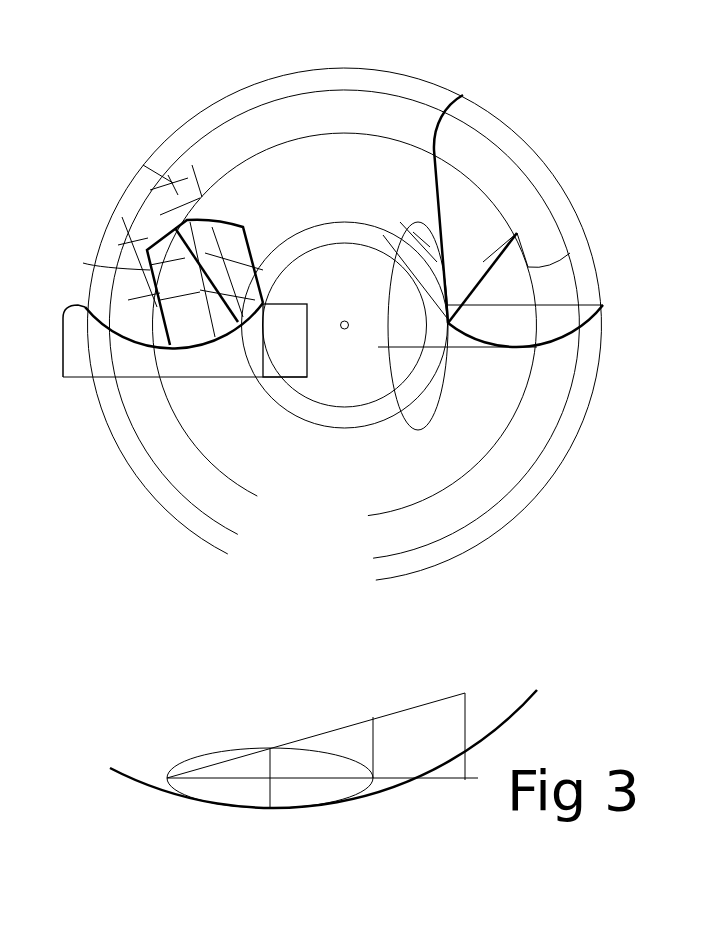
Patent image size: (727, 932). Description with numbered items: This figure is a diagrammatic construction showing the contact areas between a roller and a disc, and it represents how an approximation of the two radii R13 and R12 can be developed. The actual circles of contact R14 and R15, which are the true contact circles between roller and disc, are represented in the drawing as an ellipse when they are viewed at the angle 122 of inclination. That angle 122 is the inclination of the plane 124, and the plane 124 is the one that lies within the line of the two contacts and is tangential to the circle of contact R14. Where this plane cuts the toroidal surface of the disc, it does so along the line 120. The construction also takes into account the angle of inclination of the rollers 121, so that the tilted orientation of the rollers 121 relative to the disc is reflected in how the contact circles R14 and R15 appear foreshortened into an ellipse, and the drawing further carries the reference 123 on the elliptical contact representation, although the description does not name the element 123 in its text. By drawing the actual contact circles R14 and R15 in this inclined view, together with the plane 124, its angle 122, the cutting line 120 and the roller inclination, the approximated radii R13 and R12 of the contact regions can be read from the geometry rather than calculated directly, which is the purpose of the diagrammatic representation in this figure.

The line 120 is at (400, 120).
The rollers 121 is at (168, 175).
The angle of inclination 122 is at (507, 712).
The lens-shaped profile 123 is at (205, 752).
The plane 124 is at (570, 253).
The radius R12 is at (418, 763).
The radius R13 is at (172, 348).
The circle of contact R14 is at (514, 221).
The circle of contact R15 is at (83, 263).